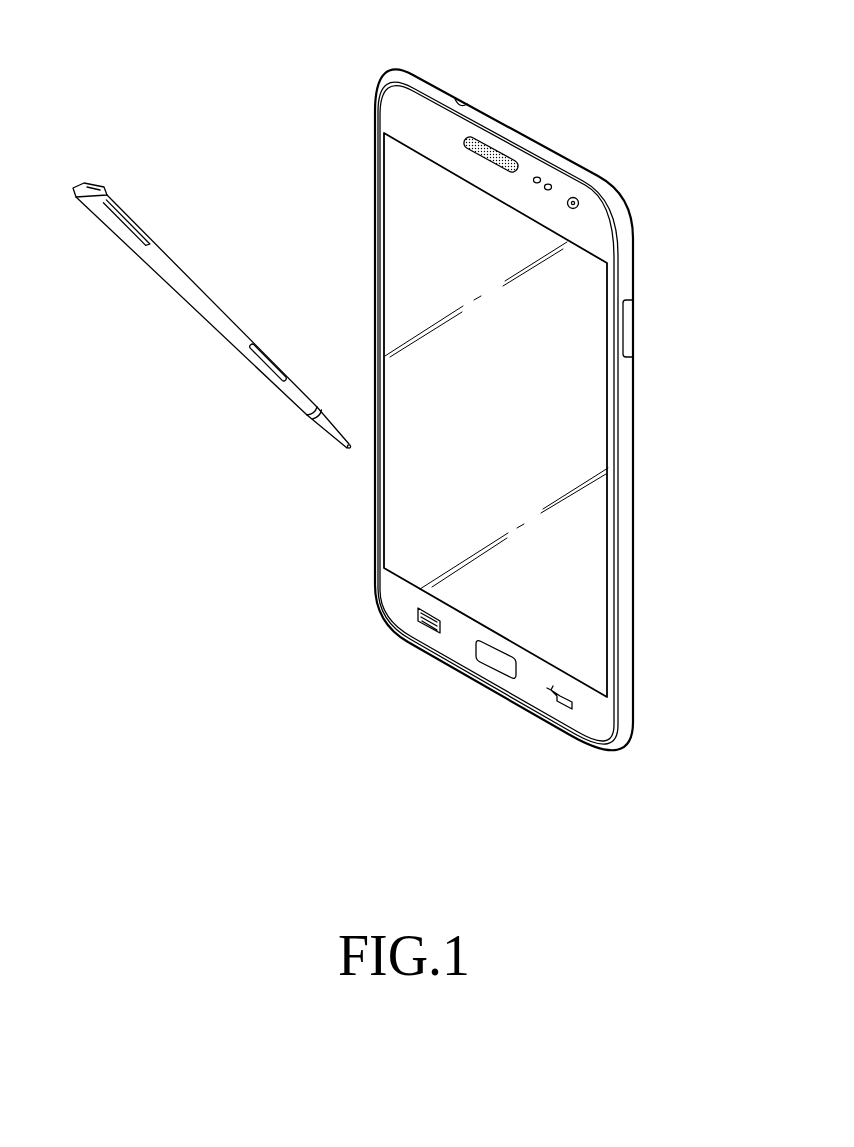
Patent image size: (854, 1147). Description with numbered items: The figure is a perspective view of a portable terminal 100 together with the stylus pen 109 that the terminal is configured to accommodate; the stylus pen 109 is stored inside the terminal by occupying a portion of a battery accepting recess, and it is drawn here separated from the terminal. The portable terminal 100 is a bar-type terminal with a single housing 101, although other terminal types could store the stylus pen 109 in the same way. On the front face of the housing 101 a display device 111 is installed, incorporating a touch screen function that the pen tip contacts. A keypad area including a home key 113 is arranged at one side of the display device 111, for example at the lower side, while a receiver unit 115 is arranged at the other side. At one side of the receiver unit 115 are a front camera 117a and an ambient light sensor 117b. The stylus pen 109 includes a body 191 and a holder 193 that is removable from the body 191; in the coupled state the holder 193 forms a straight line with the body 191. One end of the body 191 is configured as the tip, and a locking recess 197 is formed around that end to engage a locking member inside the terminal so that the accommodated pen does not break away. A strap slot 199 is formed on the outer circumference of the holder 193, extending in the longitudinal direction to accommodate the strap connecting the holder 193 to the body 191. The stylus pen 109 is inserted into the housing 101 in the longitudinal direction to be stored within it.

The portable terminal 100 is at (181, 66).
The housing 101 is at (645, 241).
The stylus pen 109 is at (216, 273).
The display device 111 is at (582, 407).
The home key 113 is at (497, 660).
The receiver unit 115 is at (482, 147).
The front camera 117a is at (575, 198).
The ambient light sensor 117b is at (537, 177).
The body 191 is at (232, 332).
The holder 193 is at (97, 182).
The locking recess 197 is at (297, 410).
The strap slot 199 is at (110, 227).